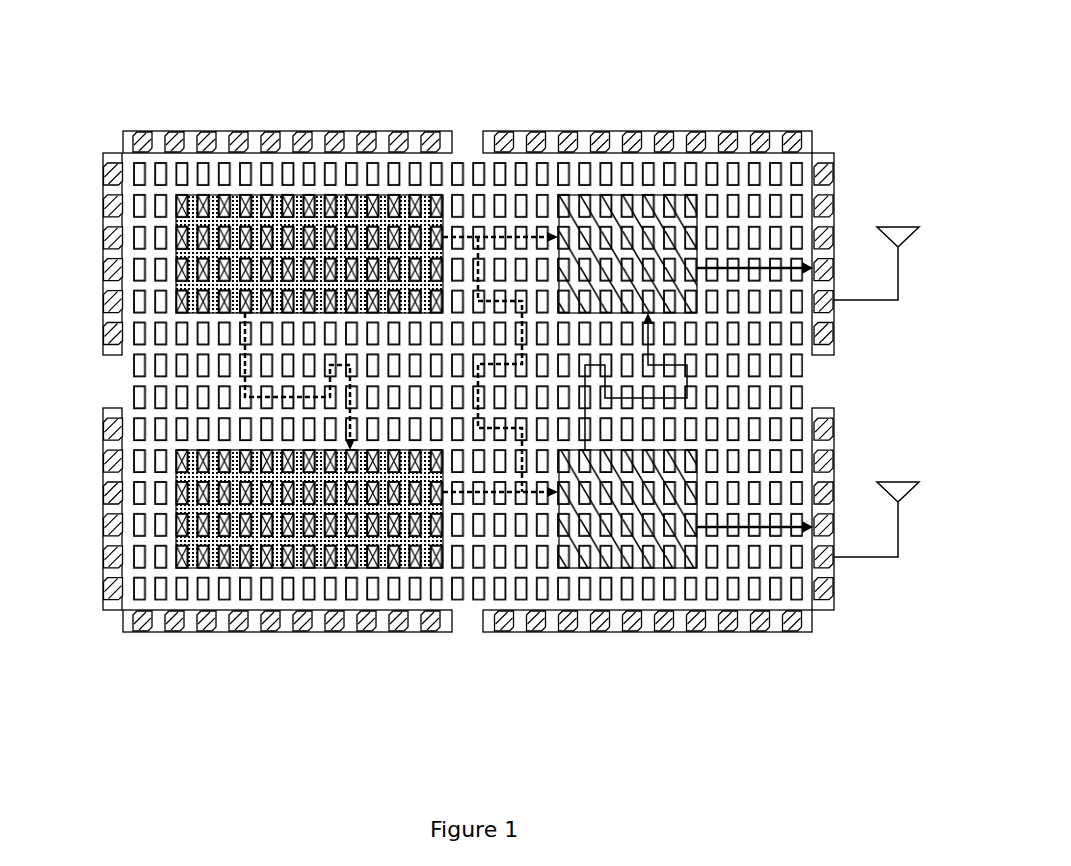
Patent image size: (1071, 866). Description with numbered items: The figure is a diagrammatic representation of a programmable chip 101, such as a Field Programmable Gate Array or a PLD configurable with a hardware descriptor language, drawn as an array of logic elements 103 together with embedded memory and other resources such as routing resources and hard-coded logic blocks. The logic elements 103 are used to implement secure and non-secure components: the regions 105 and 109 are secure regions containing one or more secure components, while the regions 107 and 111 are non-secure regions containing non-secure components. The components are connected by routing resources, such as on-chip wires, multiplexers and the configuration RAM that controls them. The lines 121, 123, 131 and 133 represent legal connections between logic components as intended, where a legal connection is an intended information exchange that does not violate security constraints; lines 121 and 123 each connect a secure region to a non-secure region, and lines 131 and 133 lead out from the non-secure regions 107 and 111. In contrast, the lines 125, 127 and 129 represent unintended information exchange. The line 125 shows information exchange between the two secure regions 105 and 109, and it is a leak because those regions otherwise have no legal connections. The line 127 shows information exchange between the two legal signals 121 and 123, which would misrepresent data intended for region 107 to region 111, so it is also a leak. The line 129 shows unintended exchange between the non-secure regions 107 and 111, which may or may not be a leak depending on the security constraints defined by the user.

The programmable chip 101 is at (220, 95).
The logic elements 103 is at (462, 568).
The secure region 105 is at (313, 213).
The non-secure region 107 is at (611, 197).
The secure region 109 is at (273, 568).
The non-secure region 111 is at (643, 568).
The legal connection line 121 is at (478, 240).
The legal connection line 123 is at (495, 500).
The leak line 125 is at (250, 343).
The leak line 127 is at (475, 388).
The unintended information exchange line 129 is at (687, 377).
The legal connection line 131 is at (751, 258).
The legal connection line 133 is at (750, 570).